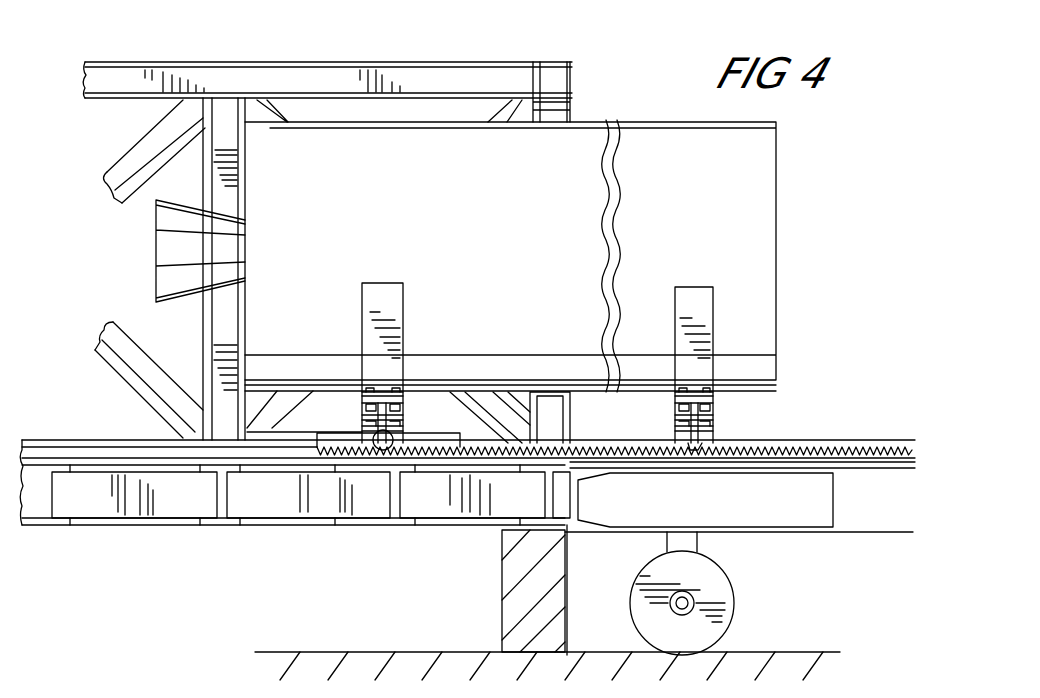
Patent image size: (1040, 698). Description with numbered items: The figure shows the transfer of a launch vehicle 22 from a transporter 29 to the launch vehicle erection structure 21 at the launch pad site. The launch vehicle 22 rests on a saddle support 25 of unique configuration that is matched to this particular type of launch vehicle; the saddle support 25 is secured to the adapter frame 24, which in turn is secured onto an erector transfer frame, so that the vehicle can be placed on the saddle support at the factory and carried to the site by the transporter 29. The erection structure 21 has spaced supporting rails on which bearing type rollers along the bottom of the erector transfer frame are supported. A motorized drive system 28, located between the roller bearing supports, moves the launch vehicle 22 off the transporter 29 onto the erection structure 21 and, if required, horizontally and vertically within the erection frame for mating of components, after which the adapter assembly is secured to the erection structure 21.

The launch vehicle erection structure 21 is at (205, 62).
The launch vehicle 22 is at (460, 222).
The adapter frame 24 is at (360, 405).
The saddle support 25 is at (395, 373).
The motorized drive system 28 is at (373, 450).
The transporter 29 is at (745, 512).